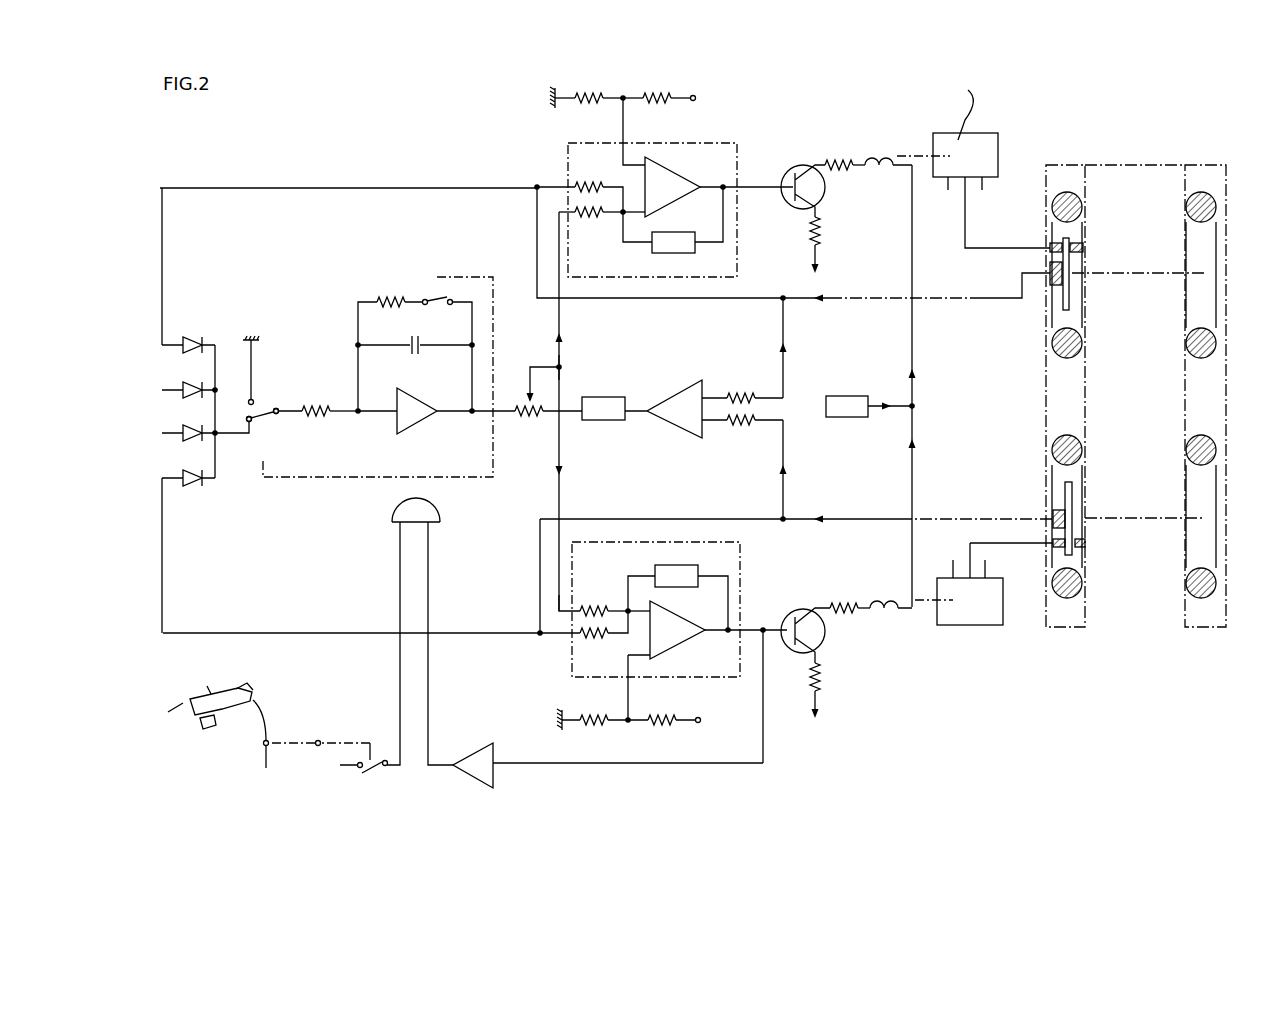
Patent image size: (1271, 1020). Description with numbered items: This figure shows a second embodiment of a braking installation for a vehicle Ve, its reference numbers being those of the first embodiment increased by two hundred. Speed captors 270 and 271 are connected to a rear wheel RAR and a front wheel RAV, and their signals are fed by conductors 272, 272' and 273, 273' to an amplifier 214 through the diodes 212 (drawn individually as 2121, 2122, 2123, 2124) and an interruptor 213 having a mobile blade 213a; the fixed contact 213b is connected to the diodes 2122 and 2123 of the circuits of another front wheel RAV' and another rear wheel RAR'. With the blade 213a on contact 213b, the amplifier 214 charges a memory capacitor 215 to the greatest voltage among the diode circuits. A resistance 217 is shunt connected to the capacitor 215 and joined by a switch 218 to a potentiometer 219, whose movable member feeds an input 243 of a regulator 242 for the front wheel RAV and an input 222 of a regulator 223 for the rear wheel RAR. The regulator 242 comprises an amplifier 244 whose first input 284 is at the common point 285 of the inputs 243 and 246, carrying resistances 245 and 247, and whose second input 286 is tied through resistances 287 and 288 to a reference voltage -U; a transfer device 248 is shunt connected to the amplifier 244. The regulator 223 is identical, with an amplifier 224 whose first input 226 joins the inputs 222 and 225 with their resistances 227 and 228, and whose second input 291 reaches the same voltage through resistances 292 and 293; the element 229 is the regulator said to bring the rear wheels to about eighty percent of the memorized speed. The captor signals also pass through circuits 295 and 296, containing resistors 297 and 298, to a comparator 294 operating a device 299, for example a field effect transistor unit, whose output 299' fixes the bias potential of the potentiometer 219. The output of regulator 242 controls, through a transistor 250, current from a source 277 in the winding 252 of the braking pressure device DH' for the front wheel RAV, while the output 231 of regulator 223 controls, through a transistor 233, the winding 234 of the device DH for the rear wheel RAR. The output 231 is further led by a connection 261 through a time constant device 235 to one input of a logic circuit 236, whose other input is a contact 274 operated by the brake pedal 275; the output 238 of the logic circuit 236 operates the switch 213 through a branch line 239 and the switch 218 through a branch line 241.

The diodes 212 is at (192, 470).
The diode 2121 is at (185, 340).
The diode 2122 is at (187, 382).
The diode 2123 is at (187, 441).
The diode 2124 is at (194, 488).
The interruptor 213 is at (258, 405).
The mobile blade 213a is at (270, 418).
The fixed contact 213b is at (262, 428).
The amplifier 214 is at (432, 425).
The memory capacitor 215 is at (413, 353).
The resistance 217 is at (372, 296).
The switch 218 is at (433, 297).
The potentiometer 219 is at (519, 417).
The input 222 is at (562, 600).
The regulator 223 is at (728, 553).
The amplifier 224 is at (678, 633).
The input 225 is at (570, 640).
The first input 226 is at (635, 600).
The resistance 227 is at (604, 642).
The resistance 228 is at (607, 580).
The regulator 229 is at (672, 570).
The output 231 is at (760, 675).
The transistor 233 is at (818, 640).
The winding 234 is at (884, 615).
The time constant device 235 is at (475, 775).
The logic circuit 236 is at (430, 507).
The output 238 is at (413, 498).
The branch line 239 is at (285, 478).
The branch line 241 is at (490, 315).
The regulator 242 is at (728, 265).
The input 243 is at (555, 206).
The amplifier 244 is at (672, 176).
The resistance 245 is at (600, 218).
The input 246 is at (560, 175).
The resistance 247 is at (598, 182).
The transfer device 248 is at (682, 248).
The transistor 250 is at (818, 195).
The winding 252 is at (860, 150).
The connection line 261 is at (730, 768).
The speed captor 270 is at (1052, 515).
The speed captor 271 is at (1055, 287).
The conductor 272 is at (795, 562).
The conductor 272' is at (351, 652).
The conductor 273 is at (792, 256).
The conductor 273' is at (348, 247).
The contact 274 is at (375, 770).
The brake pedal 275 is at (268, 697).
The source 277 is at (838, 392).
The first input 284 is at (637, 215).
The common point 285 is at (618, 248).
The second input 286 is at (621, 122).
The resistance 287 is at (668, 92).
The resistance 288 is at (600, 92).
The second input 291 is at (628, 693).
The resistance 292 is at (580, 725).
The resistance 293 is at (648, 725).
The comparator 294 is at (692, 395).
The circuit 295 is at (786, 499).
The circuit 296 is at (786, 318).
The resistor 297 is at (735, 428).
The resistor 298 is at (729, 388).
The device 299 is at (608, 429).
The output 299' is at (590, 369).
The braking pressure device DH is at (999, 629).
The braking pressure device DH' is at (930, 149).
The front wheel RAV is at (1068, 181).
The front wheel RAV' is at (1195, 181).
The rear wheel RAR is at (1074, 612).
The rear wheel RAR' is at (1199, 612).
The vehicle Ve is at (1207, 390).